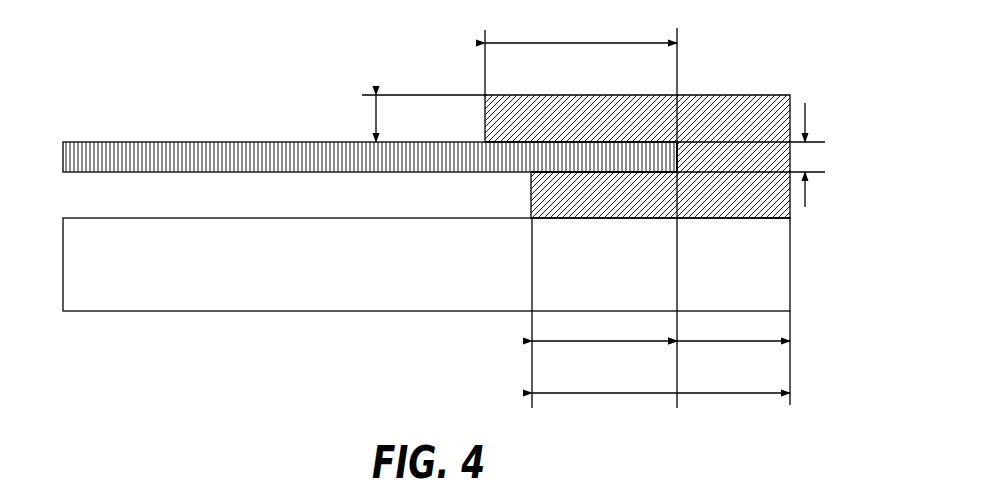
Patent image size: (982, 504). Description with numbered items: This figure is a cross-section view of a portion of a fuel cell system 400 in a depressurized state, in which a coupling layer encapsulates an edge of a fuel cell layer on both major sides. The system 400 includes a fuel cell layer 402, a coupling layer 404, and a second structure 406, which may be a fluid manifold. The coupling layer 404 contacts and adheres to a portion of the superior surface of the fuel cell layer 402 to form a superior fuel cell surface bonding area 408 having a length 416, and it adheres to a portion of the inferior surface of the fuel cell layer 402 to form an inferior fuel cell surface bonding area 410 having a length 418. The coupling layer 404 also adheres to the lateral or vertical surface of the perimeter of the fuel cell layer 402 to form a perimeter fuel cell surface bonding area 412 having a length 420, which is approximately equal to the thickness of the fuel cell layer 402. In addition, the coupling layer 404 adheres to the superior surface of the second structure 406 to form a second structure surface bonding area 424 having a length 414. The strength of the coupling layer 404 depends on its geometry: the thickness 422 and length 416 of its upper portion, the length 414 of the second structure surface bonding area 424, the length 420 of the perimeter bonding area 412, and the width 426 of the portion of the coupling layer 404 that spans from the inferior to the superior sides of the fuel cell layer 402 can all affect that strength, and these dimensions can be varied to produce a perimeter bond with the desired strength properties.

The fuel cell system 400 is at (155, 48).
The fuel cell layer 402 is at (63, 153).
The coupling layer 404 is at (760, 110).
The second structure 406 is at (78, 270).
The superior fuel cell surface bonding area 408 is at (500, 142).
The inferior fuel cell surface bonding area 410 is at (531, 190).
The perimeter fuel cell surface bonding area 412 is at (683, 152).
The length of second structure surface bonding area 414 is at (660, 395).
The length of superior fuel cell surface bonding area 416 is at (583, 42).
The length of inferior fuel cell surface bonding area 418 is at (603, 343).
The length of perimeter fuel cell surface bonding area 420 is at (810, 154).
The thickness of upper portion of coupling layer 422 is at (376, 124).
The second structure surface bonding area 424 is at (777, 220).
The width of coupling layer portion spanning fuel cell layer sides 426 is at (730, 343).